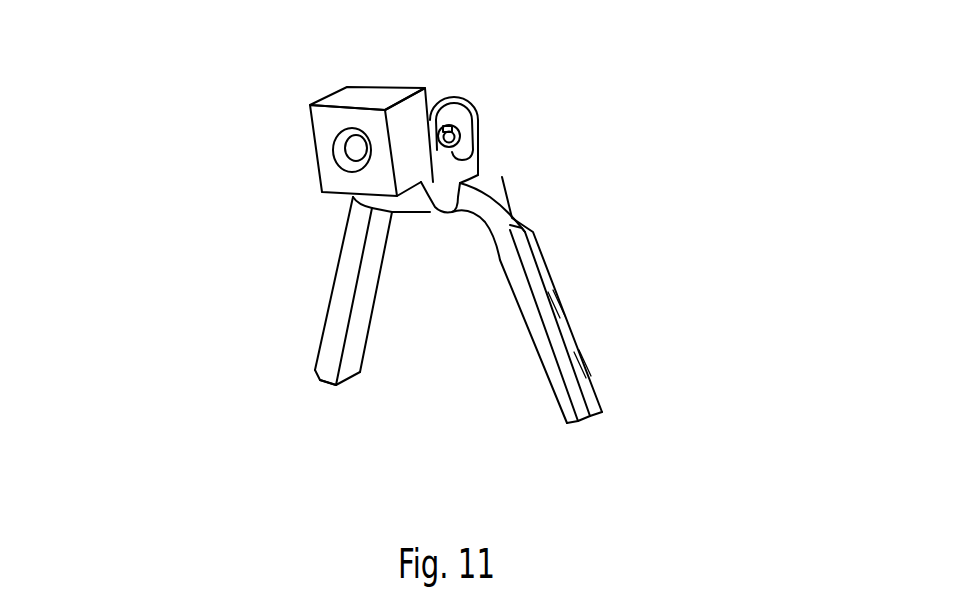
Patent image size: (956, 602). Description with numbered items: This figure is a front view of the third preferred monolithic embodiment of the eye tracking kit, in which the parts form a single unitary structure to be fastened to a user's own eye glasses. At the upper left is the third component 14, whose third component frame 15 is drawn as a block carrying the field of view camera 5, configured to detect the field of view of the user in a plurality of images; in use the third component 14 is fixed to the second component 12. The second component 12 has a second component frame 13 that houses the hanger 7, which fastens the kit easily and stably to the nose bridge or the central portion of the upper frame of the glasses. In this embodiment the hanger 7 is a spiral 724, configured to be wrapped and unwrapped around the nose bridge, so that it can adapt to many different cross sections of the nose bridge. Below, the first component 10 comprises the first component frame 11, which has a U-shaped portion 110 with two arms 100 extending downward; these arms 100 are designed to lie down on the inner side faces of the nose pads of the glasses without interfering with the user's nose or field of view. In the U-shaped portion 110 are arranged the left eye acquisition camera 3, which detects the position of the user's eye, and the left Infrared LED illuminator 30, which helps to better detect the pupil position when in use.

The left eye acquisition camera 3 is at (570, 308).
The field of view camera 5 is at (333, 158).
The hanger 7 is at (470, 117).
The first component 10 is at (285, 313).
The first component frame 11 is at (347, 302).
The second component 12 is at (485, 142).
The second component frame 13 is at (462, 178).
The third component 14 is at (283, 146).
The third component frame 15 is at (323, 103).
The left Infrared LED illuminator 30 is at (602, 375).
The arms 100 is at (575, 403).
The U-shaped portion 110 is at (347, 338).
The spiral 724 is at (452, 97).